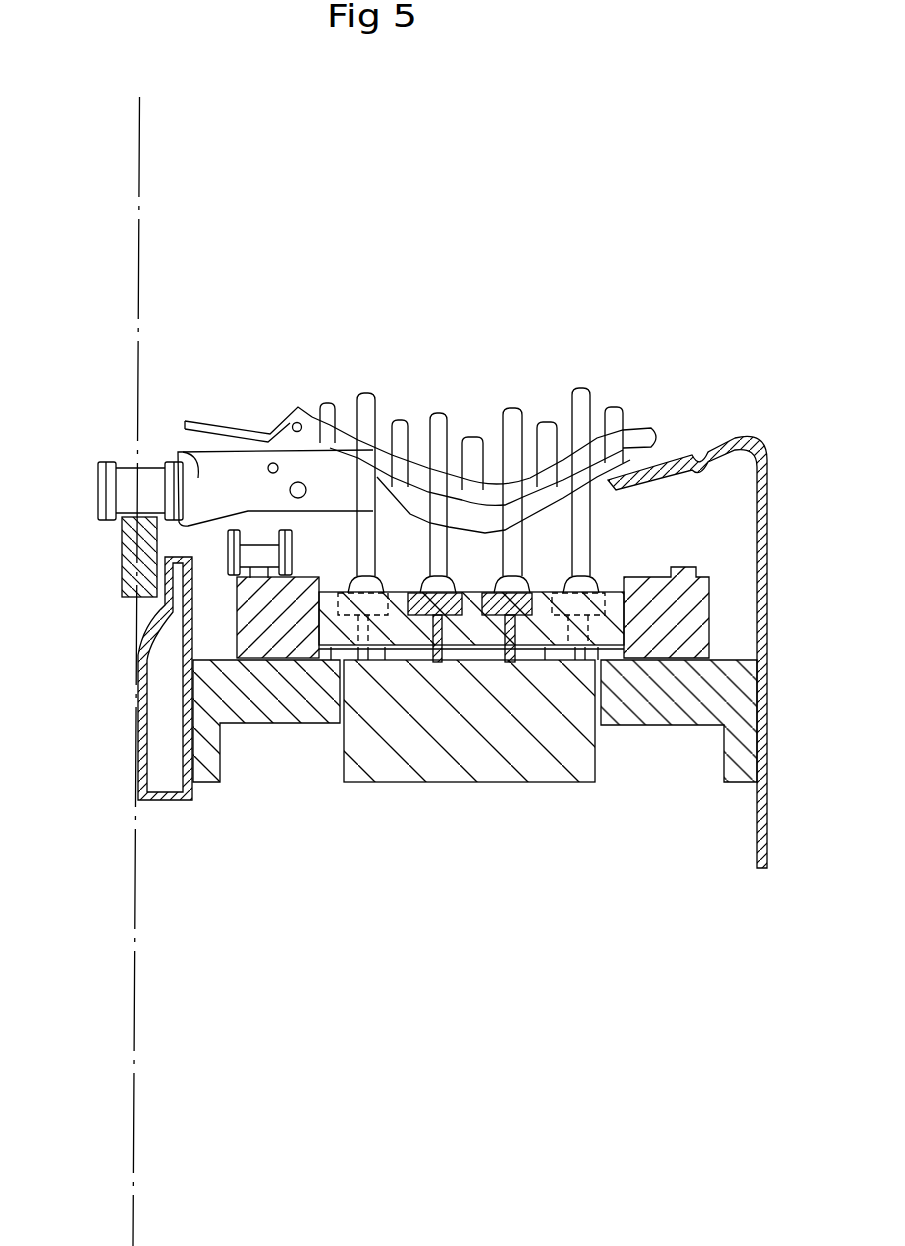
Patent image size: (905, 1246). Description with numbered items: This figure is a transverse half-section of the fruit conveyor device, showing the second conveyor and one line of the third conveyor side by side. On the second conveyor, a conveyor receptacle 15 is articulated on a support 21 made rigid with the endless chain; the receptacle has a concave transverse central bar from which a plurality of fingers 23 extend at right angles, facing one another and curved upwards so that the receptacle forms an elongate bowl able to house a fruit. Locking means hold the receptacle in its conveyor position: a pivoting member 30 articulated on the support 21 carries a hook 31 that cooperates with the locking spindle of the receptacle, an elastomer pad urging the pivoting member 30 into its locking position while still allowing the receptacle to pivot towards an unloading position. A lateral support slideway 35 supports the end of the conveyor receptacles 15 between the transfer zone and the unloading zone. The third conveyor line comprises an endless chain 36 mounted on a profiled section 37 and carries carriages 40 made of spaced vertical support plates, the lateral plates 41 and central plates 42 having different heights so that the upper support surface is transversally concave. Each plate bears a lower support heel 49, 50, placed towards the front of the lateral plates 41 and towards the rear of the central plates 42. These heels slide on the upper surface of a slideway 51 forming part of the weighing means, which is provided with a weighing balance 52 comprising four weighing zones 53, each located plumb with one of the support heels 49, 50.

The conveyor receptacle 15 is at (634, 398).
The support 21 is at (177, 450).
The fingers 23 is at (547, 420).
The pivoting member 30 is at (212, 440).
The hook 31 is at (238, 437).
The lateral support slideway 35 is at (585, 582).
The endless chain 36 is at (147, 624).
The profiled section 37 is at (273, 645).
The carriage 40 is at (465, 396).
The lateral support plate 41 is at (580, 403).
The central support plate 42 is at (437, 423).
The lower support heel 49 is at (767, 447).
The lower support heel 50 is at (530, 565).
The slideway 51 is at (390, 615).
The weighing balance 52 is at (433, 770).
The weighing zone 53 is at (528, 618).